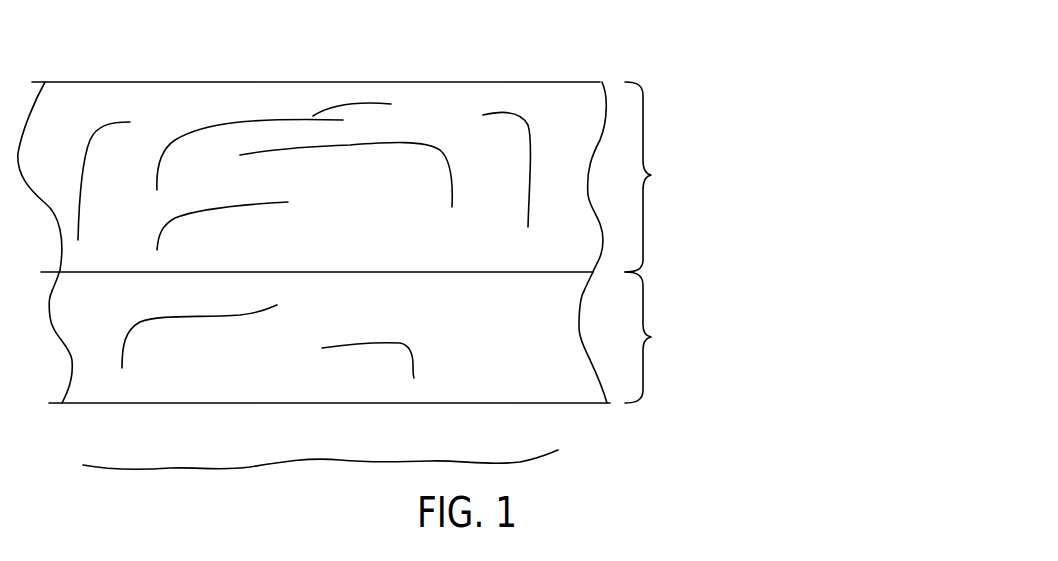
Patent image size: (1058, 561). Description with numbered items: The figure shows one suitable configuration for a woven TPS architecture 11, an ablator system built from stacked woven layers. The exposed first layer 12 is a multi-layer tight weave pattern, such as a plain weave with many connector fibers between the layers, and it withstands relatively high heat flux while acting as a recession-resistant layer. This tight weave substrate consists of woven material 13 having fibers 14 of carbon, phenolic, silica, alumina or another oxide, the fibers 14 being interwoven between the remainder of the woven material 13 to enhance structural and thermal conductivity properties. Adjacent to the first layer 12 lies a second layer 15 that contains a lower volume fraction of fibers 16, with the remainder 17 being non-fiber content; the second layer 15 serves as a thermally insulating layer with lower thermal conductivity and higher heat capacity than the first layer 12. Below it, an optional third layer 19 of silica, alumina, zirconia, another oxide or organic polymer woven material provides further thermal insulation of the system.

The woven TPS architecture 11 is at (623, 33).
The first layer 12 is at (567, 173).
The woven material 13 is at (443, 143).
The fibers 14 is at (530, 150).
The second layer 15 is at (562, 343).
The fibers 16 is at (247, 317).
The non-fiber content 17 is at (370, 332).
The third layer 19 is at (320, 439).